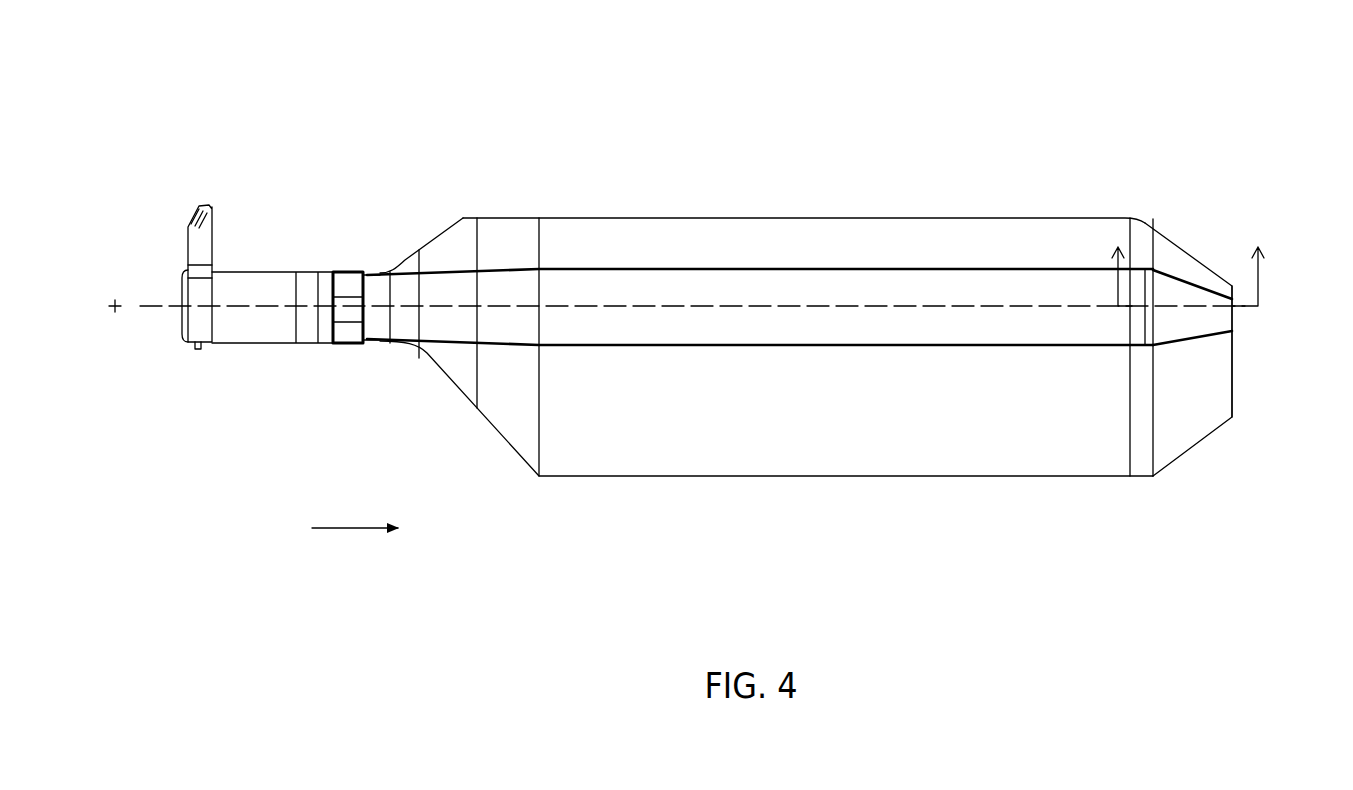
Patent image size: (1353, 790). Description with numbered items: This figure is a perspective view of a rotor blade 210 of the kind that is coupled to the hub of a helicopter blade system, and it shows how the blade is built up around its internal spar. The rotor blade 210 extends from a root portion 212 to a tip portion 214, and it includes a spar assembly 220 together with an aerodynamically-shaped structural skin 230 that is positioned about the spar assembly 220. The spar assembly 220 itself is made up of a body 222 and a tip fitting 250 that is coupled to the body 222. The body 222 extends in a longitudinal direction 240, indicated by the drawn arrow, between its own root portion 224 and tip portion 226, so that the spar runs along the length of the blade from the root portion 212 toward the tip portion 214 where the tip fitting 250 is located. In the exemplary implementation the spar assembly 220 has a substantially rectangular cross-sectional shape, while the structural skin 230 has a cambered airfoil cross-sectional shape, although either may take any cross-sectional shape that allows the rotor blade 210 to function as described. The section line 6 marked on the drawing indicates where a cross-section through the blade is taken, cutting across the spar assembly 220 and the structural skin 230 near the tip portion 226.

The rotor blade 210 is at (178, 120).
The root portion 212 is at (178, 373).
The tip portion 214 is at (1227, 480).
The spar assembly 220 is at (603, 253).
The body 222 is at (655, 269).
The root portion 224 is at (403, 266).
The tip portion 226 is at (1213, 265).
The aerodynamically-shaped structural skin 230 is at (712, 218).
The longitudinal direction 240 is at (343, 535).
The tip fitting 250 is at (1167, 273).
The section line 6- 6 is at (1103, 258).